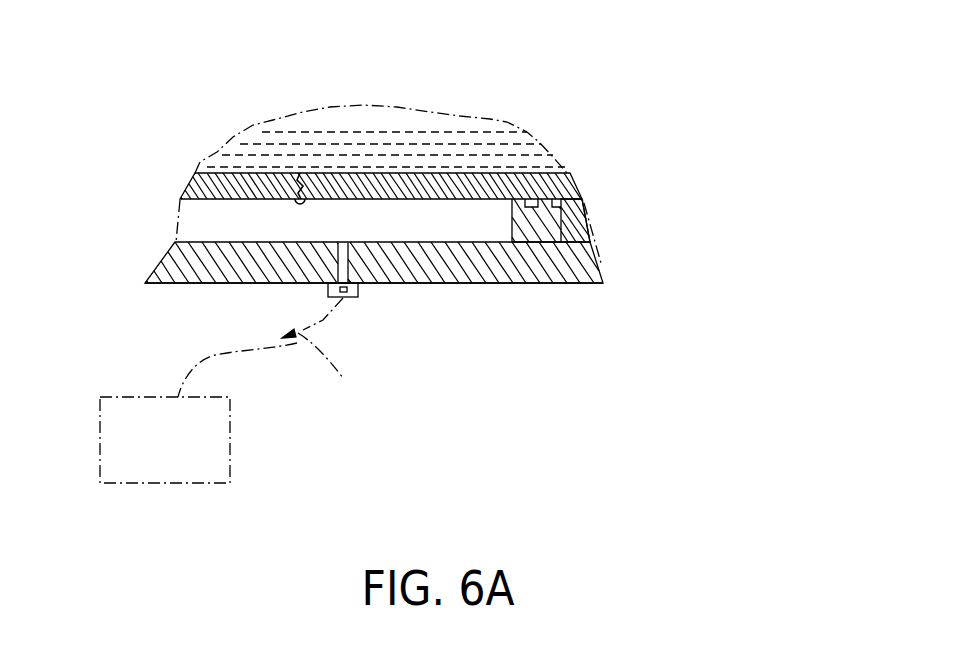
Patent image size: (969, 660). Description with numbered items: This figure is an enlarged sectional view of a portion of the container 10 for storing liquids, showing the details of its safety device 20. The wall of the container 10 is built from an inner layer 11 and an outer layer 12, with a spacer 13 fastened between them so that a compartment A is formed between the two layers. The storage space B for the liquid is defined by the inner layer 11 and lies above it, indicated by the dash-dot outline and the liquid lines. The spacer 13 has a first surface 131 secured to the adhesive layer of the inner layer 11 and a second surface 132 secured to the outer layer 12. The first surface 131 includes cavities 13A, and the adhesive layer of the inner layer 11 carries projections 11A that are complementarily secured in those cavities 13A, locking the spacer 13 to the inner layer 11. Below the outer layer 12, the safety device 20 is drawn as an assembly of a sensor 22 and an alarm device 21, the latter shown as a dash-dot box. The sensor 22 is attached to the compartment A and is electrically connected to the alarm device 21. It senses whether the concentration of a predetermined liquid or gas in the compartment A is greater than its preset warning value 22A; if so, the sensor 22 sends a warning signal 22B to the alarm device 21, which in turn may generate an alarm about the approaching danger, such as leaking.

The container 10 is at (537, 302).
The inner layer 11 is at (460, 178).
The projections 11A is at (562, 243).
The outer layer 12 is at (477, 268).
The spacer 13 is at (587, 218).
The cavities 13A is at (532, 203).
The first surface 131 is at (573, 190).
The second surface 132 is at (588, 258).
The safety device 20 is at (448, 333).
The alarm device 21 is at (230, 405).
The sensor 22 is at (345, 298).
The preset warning value 22A is at (347, 292).
The warning signal 22B is at (343, 367).
The compartment A is at (197, 222).
The storage space B is at (253, 148).